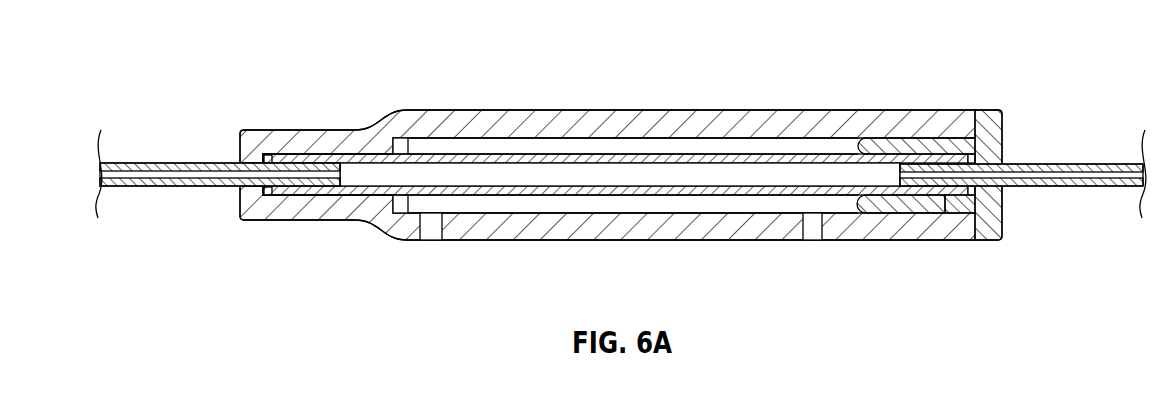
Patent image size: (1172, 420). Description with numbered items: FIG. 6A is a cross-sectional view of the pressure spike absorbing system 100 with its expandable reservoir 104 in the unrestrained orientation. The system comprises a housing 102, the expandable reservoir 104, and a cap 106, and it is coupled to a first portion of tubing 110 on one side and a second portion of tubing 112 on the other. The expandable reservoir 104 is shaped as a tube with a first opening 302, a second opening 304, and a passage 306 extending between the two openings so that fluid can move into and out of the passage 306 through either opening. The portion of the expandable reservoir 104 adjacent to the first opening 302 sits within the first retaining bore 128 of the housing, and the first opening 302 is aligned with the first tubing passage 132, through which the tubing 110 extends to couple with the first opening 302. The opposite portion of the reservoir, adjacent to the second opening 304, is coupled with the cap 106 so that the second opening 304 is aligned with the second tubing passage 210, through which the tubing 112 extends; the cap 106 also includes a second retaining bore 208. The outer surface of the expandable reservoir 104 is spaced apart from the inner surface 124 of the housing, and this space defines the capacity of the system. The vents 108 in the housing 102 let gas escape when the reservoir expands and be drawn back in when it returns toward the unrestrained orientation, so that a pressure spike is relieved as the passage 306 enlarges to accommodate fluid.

The pressure spike absorbing system 100 is at (636, 41).
The housing 102 is at (433, 104).
The expandable reservoir 104 is at (515, 150).
The cap 106 is at (986, 104).
The vent passage 108 is at (430, 228).
The tubing 110 is at (138, 163).
The tubing 112 is at (1080, 164).
The inner surface 124 is at (632, 207).
The first retaining bore 128 is at (325, 150).
The first tubing passage 132 is at (253, 160).
The second retaining bore 208 is at (870, 150).
The second tubing passage 210 is at (987, 192).
The first opening 302 is at (295, 190).
The second opening 304 is at (952, 207).
The passage 306 is at (748, 172).